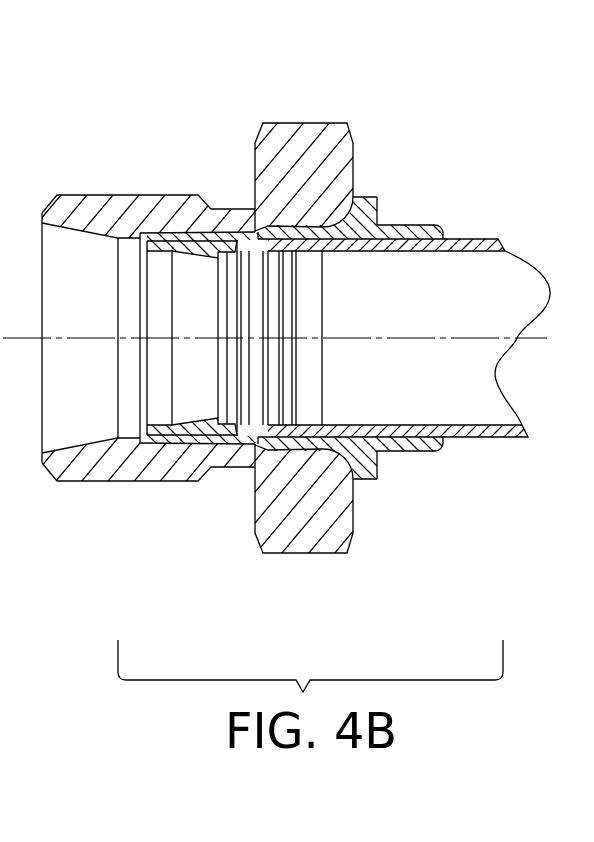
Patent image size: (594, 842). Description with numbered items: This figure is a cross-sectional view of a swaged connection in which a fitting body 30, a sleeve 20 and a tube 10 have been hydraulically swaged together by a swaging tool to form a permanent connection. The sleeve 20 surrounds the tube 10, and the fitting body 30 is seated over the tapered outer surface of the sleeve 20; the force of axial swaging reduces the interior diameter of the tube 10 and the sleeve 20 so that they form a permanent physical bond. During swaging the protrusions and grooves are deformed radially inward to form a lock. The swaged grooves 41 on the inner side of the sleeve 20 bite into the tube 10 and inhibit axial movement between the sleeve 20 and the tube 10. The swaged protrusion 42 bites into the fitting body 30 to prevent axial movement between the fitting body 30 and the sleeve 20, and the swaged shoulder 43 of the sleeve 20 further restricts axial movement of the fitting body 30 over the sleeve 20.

The tube 10 is at (484, 235).
The sleeve 20 is at (400, 477).
The fitting body 30 is at (253, 115).
The swaged grooves 41 is at (243, 239).
The swaged protrusion 42 is at (296, 221).
The swaged shoulder 43 is at (356, 199).